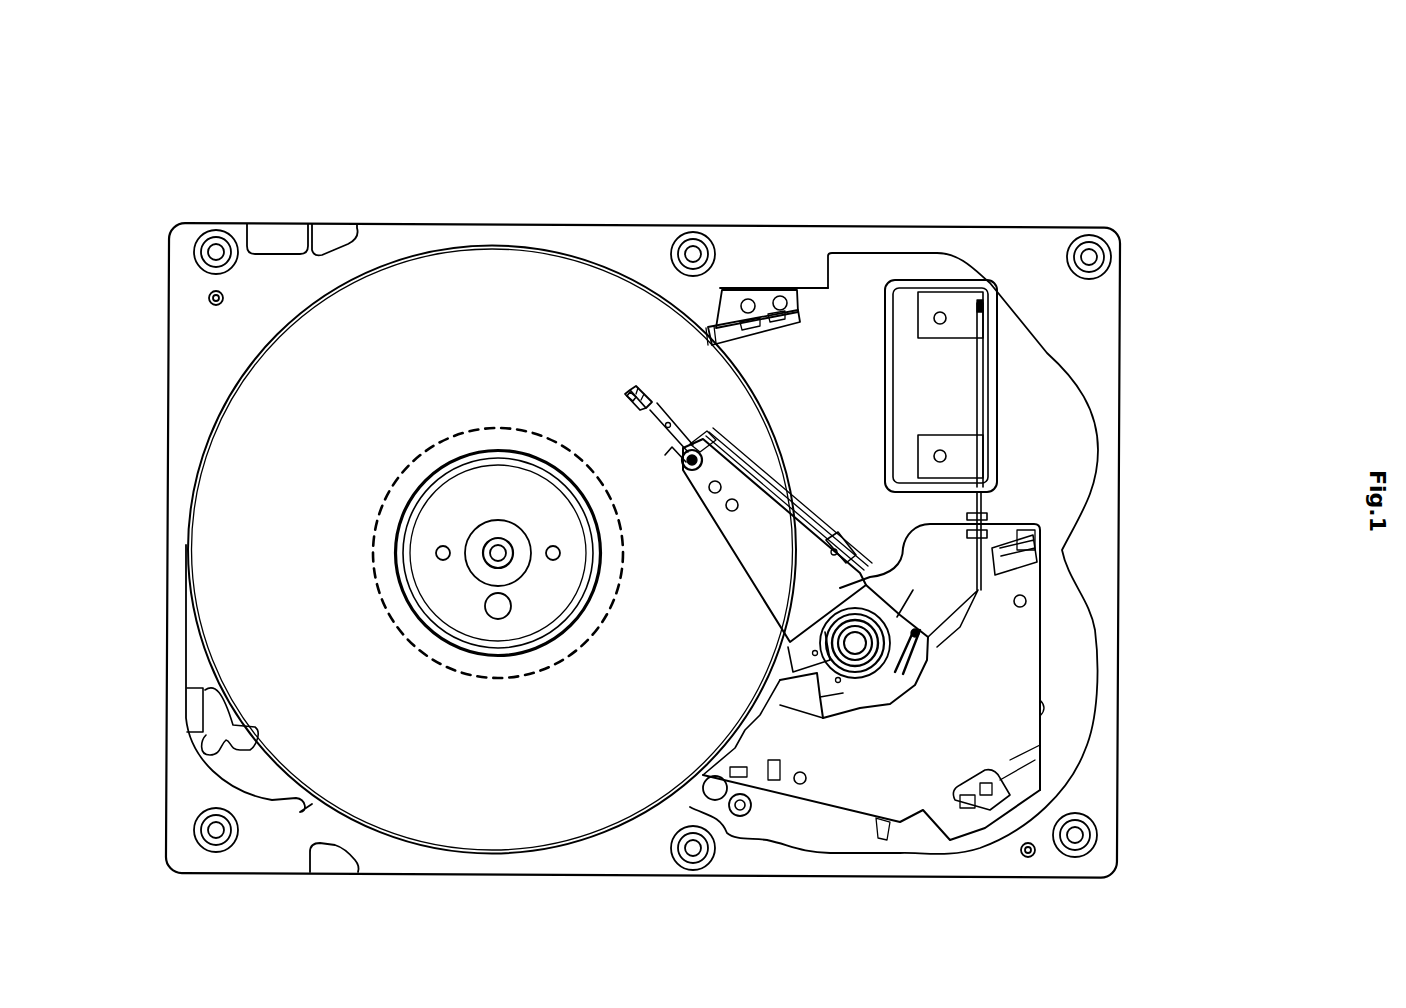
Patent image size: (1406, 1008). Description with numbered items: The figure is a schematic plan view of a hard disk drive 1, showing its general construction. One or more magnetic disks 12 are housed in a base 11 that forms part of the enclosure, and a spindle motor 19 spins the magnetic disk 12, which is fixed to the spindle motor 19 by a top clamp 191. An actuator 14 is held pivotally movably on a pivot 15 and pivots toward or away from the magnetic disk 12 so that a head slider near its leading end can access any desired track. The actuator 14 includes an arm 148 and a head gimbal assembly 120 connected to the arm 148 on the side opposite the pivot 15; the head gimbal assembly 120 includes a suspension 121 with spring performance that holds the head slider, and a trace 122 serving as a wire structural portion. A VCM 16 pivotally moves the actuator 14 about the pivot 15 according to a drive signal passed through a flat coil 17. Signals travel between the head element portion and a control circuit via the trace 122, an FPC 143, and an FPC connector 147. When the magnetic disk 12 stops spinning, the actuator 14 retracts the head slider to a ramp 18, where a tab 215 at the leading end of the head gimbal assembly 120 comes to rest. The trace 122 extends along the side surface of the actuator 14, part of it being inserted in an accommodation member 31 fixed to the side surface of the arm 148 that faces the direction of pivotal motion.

The hard disk drive 1 is at (972, 110).
The base 11 is at (166, 357).
The magnetic disk 12 is at (186, 637).
The actuator 14 is at (832, 449).
The pivot 15 is at (790, 683).
The VCM 16 is at (1090, 680).
The flat coil 17 is at (898, 690).
The ramp 18 is at (746, 336).
The spindle motor 19 is at (518, 670).
The accommodation member 31 is at (814, 548).
The head gimbal assembly 120 is at (671, 396).
The suspension 121 is at (668, 445).
The trace 122 is at (746, 475).
The FPC 143 is at (905, 543).
The FPC connector 147 is at (884, 306).
The arm 148 is at (728, 538).
The top clamp 191 is at (490, 452).
The tab 215 is at (634, 395).